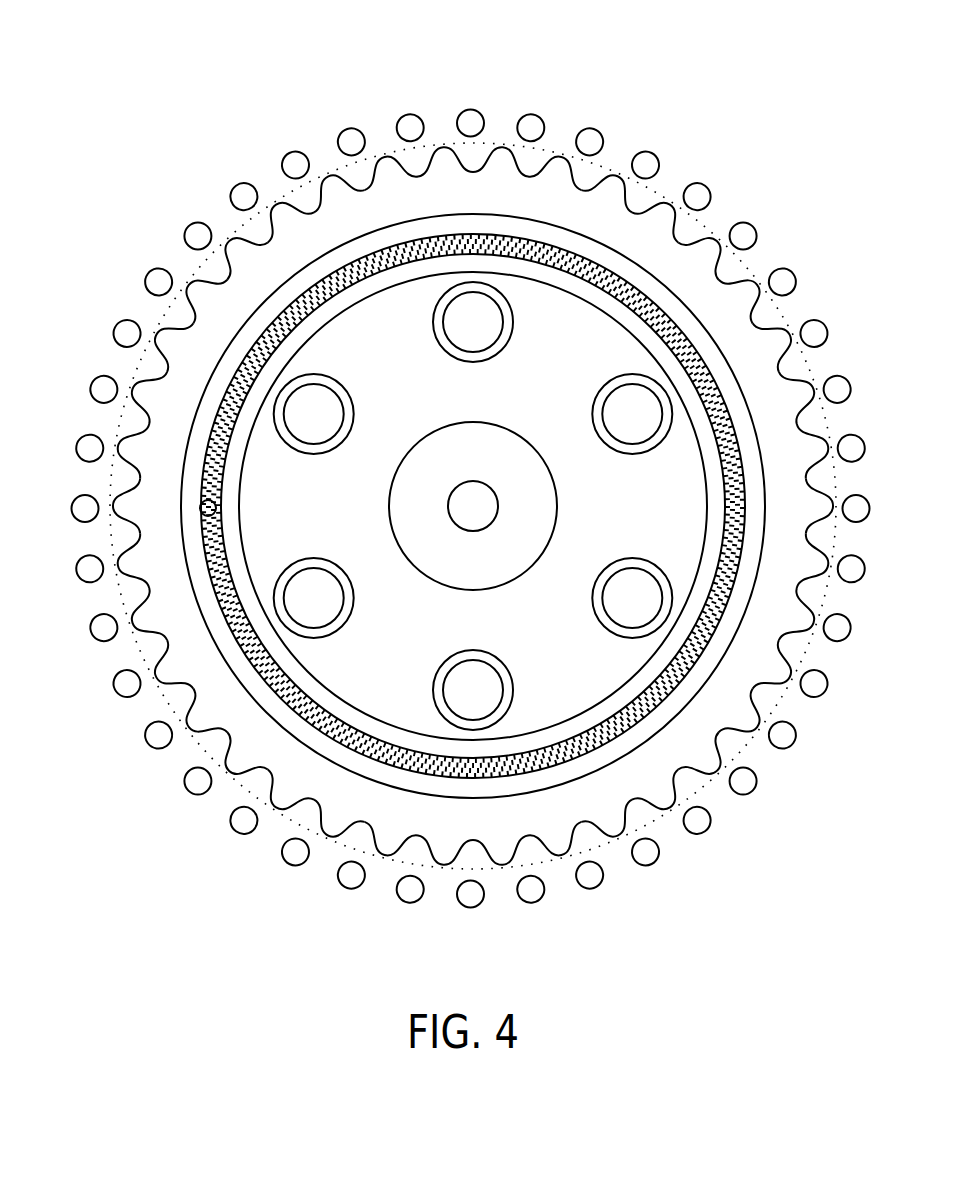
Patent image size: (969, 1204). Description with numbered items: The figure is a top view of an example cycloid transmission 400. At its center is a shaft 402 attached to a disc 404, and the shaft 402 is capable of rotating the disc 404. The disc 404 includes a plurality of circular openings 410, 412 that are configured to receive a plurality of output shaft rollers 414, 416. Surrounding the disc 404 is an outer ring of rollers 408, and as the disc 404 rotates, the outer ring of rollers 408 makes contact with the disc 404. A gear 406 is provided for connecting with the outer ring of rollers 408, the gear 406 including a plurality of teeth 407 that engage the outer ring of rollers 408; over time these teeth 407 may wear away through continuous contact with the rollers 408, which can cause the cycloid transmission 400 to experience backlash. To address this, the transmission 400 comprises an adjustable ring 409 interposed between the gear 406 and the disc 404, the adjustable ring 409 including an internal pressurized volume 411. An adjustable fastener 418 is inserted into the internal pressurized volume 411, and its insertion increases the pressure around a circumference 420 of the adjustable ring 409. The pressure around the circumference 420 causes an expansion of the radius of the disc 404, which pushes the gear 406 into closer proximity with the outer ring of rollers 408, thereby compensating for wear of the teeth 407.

The cycloid transmission 400 is at (222, 96).
The shaft 402 is at (479, 510).
The disc 404 is at (678, 452).
The gear 406 is at (145, 628).
The teeth 407 is at (216, 738).
The outer ring of rollers 408 is at (472, 120).
The adjustable ring 409 is at (575, 770).
The circular opening 410 is at (357, 417).
The internal pressurized volume 411 is at (310, 705).
The circular opening 412 is at (508, 342).
The output shaft roller 414 is at (313, 437).
The output shaft roller 416 is at (458, 323).
The adjustable fastener 418 is at (215, 509).
The circumference 420 is at (258, 702).